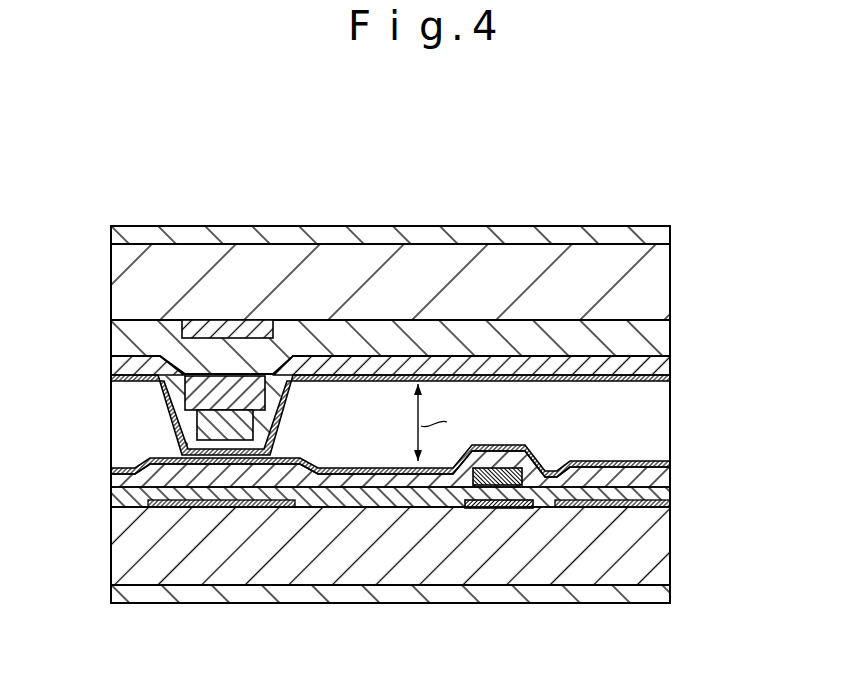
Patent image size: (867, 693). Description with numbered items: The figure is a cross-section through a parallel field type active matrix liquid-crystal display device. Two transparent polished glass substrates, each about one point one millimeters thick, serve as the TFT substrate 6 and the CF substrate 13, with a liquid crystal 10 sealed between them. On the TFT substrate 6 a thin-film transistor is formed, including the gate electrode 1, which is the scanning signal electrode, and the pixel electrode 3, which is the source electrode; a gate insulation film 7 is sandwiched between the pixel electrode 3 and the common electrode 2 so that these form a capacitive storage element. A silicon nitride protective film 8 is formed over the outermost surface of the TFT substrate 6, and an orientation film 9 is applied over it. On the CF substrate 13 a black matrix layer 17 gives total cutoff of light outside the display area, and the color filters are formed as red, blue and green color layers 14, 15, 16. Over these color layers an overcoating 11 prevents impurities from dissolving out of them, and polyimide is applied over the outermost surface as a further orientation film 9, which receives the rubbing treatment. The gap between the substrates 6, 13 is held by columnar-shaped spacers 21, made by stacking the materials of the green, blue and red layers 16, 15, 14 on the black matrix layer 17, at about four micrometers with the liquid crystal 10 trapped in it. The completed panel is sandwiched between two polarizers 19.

The gate electrode 1 is at (598, 508).
The common electrode 2 is at (503, 508).
The pixel electrode 3 is at (496, 468).
The TFT substrate 6 is at (657, 550).
The gate insulation film 7 is at (670, 497).
The interlayer insulating film 8 is at (670, 475).
The orientation film 9 is at (670, 380).
The liquid crystal 10 is at (653, 418).
The overcoating 11 is at (670, 363).
The CF substrate 13 is at (655, 287).
The red color layer 14 is at (243, 432).
The blue color layer 15 is at (257, 398).
The green color layer 16 is at (657, 338).
The black matrix layer 17 is at (228, 328).
The polarizer 19 is at (660, 233).
The columnar-shaped spacer 21 is at (158, 377).